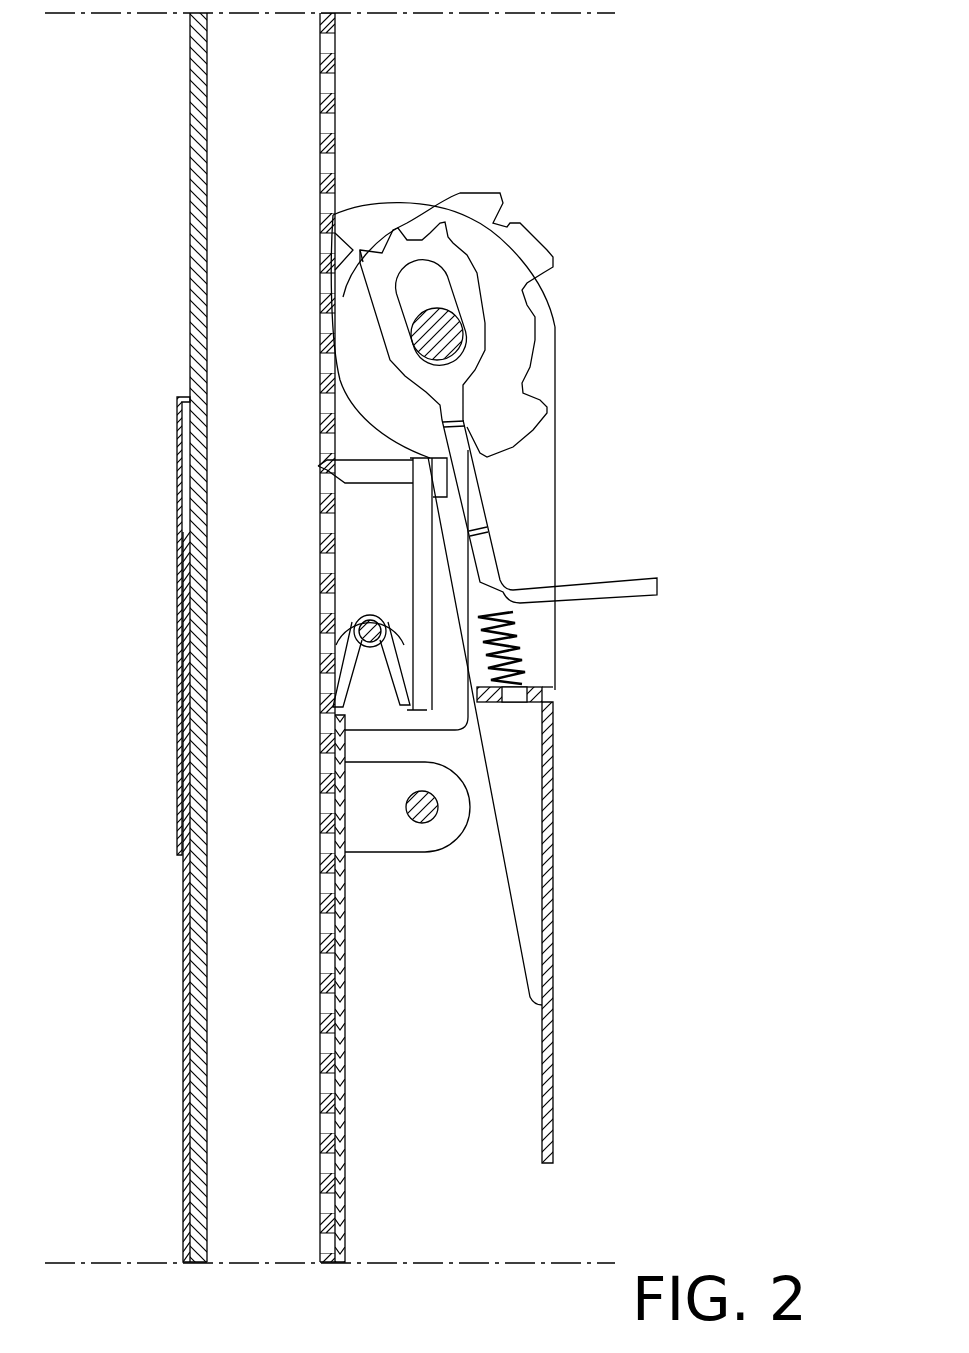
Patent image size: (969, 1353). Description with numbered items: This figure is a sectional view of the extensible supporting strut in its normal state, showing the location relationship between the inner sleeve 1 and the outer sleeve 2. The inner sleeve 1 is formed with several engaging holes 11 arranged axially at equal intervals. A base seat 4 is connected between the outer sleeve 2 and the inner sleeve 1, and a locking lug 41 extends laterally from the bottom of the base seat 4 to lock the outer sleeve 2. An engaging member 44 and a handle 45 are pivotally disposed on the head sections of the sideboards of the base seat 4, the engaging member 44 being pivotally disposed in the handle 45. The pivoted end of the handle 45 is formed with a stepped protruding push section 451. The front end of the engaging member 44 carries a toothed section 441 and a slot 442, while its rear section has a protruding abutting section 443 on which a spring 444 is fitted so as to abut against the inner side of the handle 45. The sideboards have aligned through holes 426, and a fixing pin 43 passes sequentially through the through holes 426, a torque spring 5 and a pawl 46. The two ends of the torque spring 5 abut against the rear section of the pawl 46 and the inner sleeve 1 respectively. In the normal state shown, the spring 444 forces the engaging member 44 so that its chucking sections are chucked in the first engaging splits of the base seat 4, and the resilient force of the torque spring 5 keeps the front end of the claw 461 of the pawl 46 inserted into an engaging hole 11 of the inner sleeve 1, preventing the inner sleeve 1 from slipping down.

The inner sleeve 1 is at (190, 264).
The outer sleeve 2 is at (184, 985).
The base seat 4 is at (177, 668).
The torque spring 5 is at (334, 690).
The engaging hole 11 is at (320, 428).
The locking lug 41 is at (363, 827).
The fixing pin 43 is at (360, 633).
The engaging member 44 is at (505, 542).
The handle 45 is at (523, 863).
The pawl 46 is at (425, 585).
The through hole 426 is at (352, 618).
The toothed section 441 is at (506, 362).
The slot 442 is at (430, 298).
The abutting section 443 is at (530, 630).
The spring 444 is at (530, 672).
The push section 451 is at (360, 227).
The claw 461 is at (318, 487).